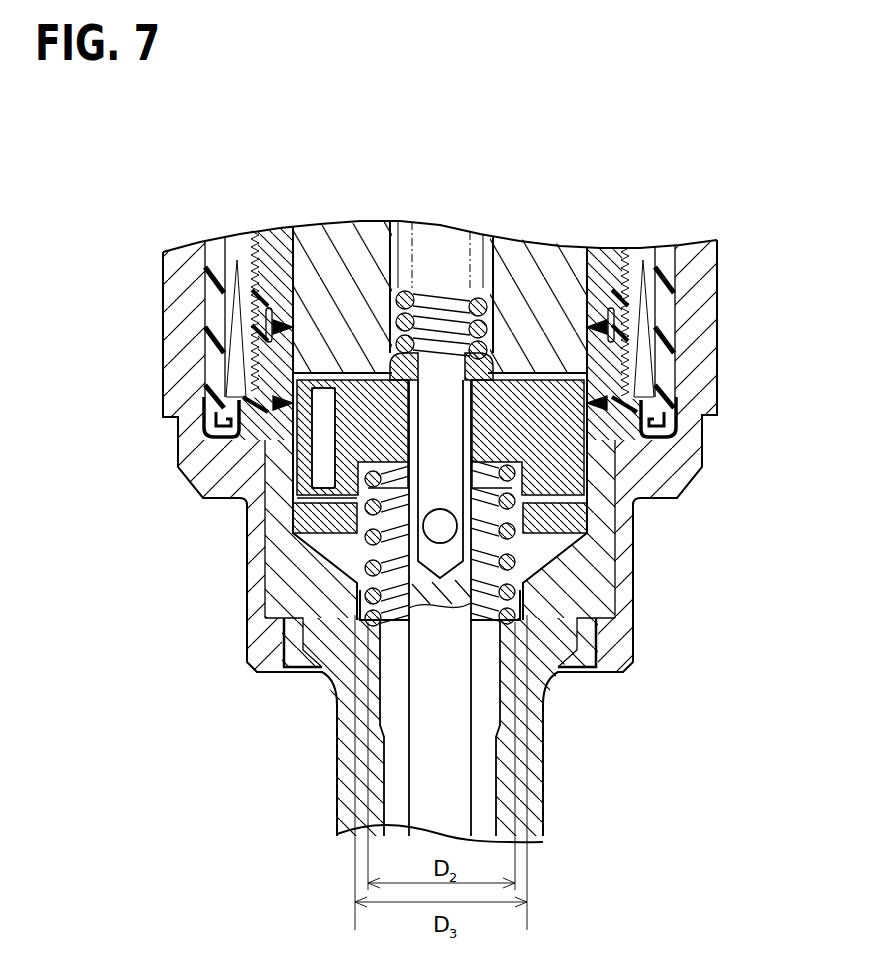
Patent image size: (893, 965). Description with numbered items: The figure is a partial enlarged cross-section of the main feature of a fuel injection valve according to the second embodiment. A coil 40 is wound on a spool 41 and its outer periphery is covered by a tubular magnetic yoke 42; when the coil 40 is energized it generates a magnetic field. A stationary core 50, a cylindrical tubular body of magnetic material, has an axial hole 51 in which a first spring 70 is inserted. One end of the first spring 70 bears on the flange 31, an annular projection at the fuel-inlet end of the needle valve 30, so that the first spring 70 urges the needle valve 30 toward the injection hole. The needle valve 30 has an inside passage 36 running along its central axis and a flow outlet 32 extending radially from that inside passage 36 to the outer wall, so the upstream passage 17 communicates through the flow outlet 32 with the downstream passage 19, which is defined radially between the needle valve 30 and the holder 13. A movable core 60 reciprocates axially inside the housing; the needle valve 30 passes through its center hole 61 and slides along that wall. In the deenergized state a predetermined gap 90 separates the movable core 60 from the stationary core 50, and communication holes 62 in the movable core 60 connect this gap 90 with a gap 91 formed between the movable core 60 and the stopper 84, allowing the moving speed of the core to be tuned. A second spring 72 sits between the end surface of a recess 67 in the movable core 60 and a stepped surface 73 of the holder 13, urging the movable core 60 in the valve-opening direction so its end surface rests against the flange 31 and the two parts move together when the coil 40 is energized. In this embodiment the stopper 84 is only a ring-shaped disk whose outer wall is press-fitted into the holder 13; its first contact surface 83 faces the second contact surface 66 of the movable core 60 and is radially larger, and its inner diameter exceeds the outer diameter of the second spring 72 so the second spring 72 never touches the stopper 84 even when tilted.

The holder 13 is at (357, 758).
The upstream passage 17 is at (437, 250).
The downstream passage 19 is at (395, 805).
The needle valve 30 is at (440, 718).
The flange 31 is at (300, 337).
The flow outlet 32 is at (440, 530).
The inside passage 36 is at (670, 433).
The coil 40 is at (650, 273).
The spool 41 is at (618, 300).
The yoke 42 is at (698, 337).
The stationary core 50 is at (340, 277).
The hole 51 is at (470, 300).
The movable core 60 is at (353, 445).
The center hole 61 is at (635, 375).
The communication holes 62 is at (323, 423).
The second contact surface 66 is at (557, 517).
The recess 67 is at (603, 475).
The first spring 70 is at (403, 288).
The second spring 72 is at (377, 568).
The stepped surface 73 is at (375, 607).
The first contact surface 83 is at (660, 480).
The stopper 84 is at (307, 517).
The gap 90 is at (260, 377).
The gap 91 is at (318, 496).